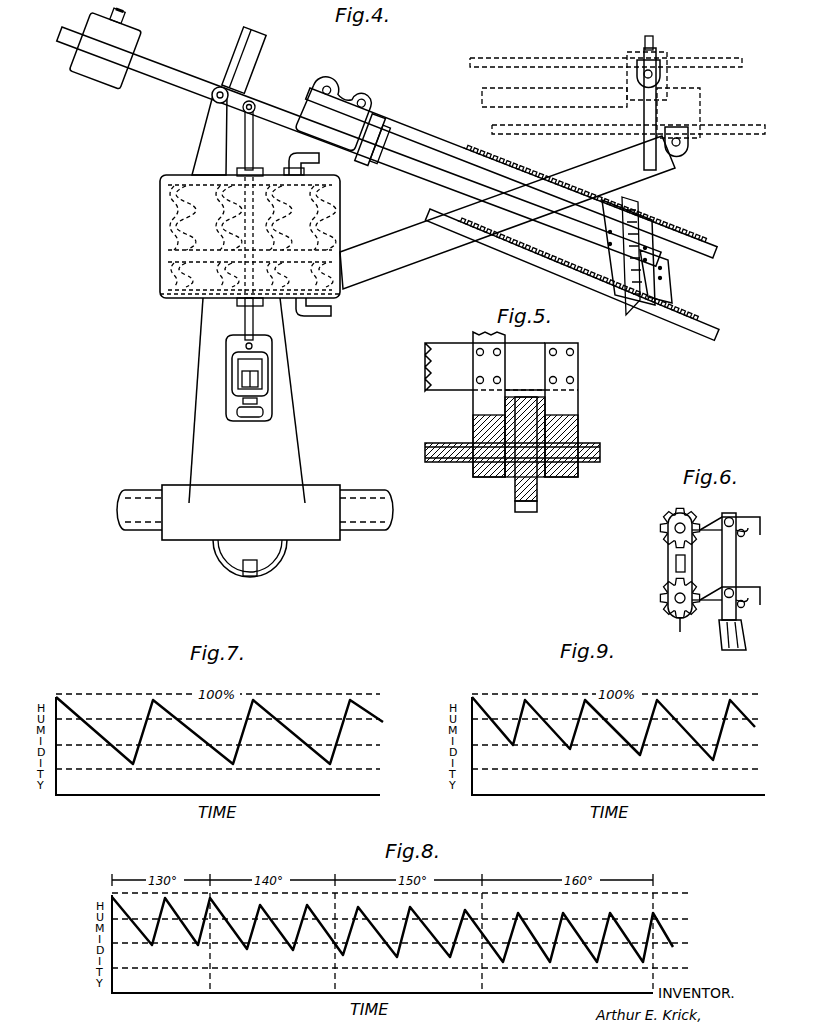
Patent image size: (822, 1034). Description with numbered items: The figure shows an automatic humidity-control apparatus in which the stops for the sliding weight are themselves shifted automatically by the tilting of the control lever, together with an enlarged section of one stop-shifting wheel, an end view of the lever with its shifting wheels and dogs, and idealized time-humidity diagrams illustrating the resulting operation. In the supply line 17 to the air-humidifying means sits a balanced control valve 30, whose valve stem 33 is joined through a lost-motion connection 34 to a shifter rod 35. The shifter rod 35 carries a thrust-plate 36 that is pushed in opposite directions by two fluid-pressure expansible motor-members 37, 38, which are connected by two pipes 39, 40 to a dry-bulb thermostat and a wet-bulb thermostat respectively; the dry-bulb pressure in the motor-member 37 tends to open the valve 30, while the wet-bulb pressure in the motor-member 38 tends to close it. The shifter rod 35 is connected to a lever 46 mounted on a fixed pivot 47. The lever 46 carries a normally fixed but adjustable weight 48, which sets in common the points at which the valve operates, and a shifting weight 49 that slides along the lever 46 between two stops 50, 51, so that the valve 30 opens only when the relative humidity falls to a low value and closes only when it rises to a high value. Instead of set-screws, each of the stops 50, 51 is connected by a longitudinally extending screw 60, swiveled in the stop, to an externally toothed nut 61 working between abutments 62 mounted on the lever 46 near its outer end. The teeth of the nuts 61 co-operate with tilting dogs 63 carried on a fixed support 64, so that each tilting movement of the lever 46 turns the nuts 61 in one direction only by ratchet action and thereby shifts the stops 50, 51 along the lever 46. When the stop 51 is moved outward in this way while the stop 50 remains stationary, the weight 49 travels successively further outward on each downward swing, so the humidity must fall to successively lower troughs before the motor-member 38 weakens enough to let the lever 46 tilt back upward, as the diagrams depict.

In FIG. 4, the supply line 17 is at (140, 540).
In FIG. 4, the control valve 30 is at (251, 531).
In FIG. 4, the valve stem 33 is at (260, 382).
In FIG. 4, the lost-motion connection 34 is at (268, 363).
In FIG. 4, the shifter rod 35 is at (248, 140).
In FIG. 4, the thrust-plate 36 is at (163, 258).
In FIG. 4, the motor-member 37 is at (165, 278).
In FIG. 4, the motor-member 38 is at (163, 228).
In FIG. 4, the pipe 39 is at (335, 312).
In FIG. 4, the pipe 40 is at (296, 155).
In FIG. 4, the lever 46 is at (175, 73).
In FIG. 6, the lever 46 is at (676, 560).
In FIG. 4, the fixed pivot 47 is at (225, 88).
In FIG. 4, the adjustable weight 48 is at (112, 92).
In FIG. 4, the shifting weight 49 is at (391, 190).
In FIG. 4, the stop 50 is at (306, 80).
In FIG. 4, the stop 51 is at (420, 212).
In FIG. 4, the screw 60 is at (742, 58).
In FIG. 5, the screw 60 is at (602, 450).
In FIG. 6, the screw 60 is at (674, 528).
In FIG. 4, the toothed nut 61 is at (651, 42).
In FIG. 5, the toothed nut 61 is at (516, 480).
In FIG. 6, the toothed nut 61 is at (682, 632).
In FIG. 4, the abutment 62 is at (670, 282).
In FIG. 5, the abutment 62 is at (476, 405).
In FIG. 6, the abutment 62 is at (676, 580).
In FIG. 4, the tilting dog 63 is at (654, 70).
In FIG. 6, the tilting dog 63 is at (752, 586).
In FIG. 4, the fixed support 64 is at (680, 176).
In FIG. 6, the fixed support 64 is at (722, 640).